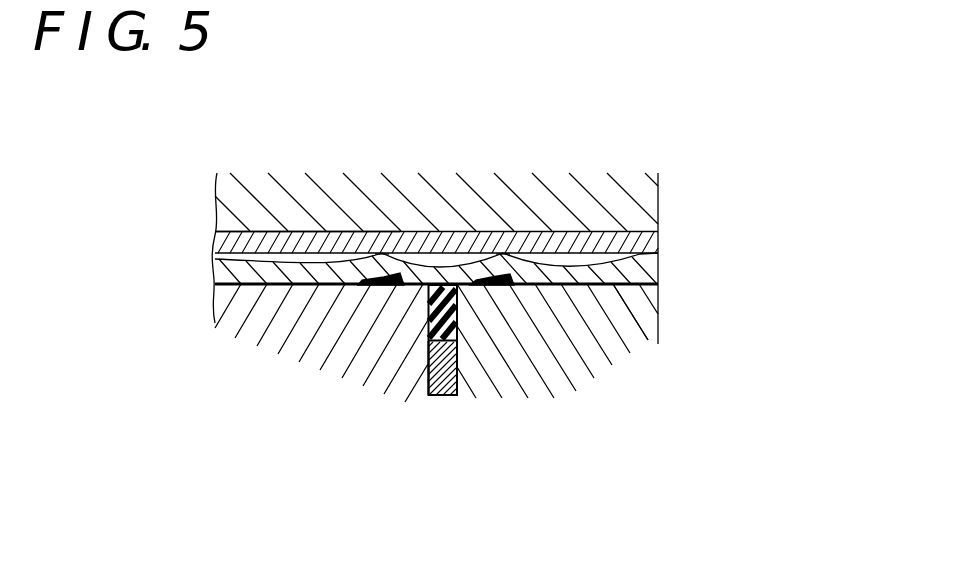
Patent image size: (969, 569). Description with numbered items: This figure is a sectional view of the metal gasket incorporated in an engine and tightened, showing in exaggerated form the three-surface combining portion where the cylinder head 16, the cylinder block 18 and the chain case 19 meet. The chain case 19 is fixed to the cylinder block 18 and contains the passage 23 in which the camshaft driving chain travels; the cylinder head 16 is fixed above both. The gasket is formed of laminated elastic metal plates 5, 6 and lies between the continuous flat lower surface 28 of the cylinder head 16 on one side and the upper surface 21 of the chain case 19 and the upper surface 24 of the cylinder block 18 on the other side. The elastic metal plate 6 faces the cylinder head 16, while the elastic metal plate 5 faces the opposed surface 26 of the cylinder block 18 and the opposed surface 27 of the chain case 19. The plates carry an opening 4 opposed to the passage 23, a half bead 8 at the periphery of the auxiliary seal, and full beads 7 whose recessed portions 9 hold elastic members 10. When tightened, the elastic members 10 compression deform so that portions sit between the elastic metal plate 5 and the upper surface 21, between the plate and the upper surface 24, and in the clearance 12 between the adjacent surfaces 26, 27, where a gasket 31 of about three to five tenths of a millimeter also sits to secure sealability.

The opening 4 is at (660, 241).
The elastic metal plate 5 is at (630, 287).
The elastic metal plate 6 is at (345, 243).
The full bead 7 is at (443, 272).
The half bead 8 is at (277, 265).
The recessed portion 9 is at (377, 287).
The elastic member 10 is at (381, 262).
The clearance 12 is at (442, 395).
The cylinder head 16 is at (557, 207).
The cylinder block 18 is at (289, 318).
The chain case 19 is at (574, 338).
The upper surface of the chain case 21 is at (587, 285).
The passage 23 is at (660, 309).
The upper surface of the cylinder block 24 is at (310, 282).
The opposed surface of the cylinder block 26 is at (427, 360).
The opposed surface of the chain case 27 is at (460, 373).
The lower surface of the cylinder head 28 is at (240, 238).
The gasket 31 is at (440, 396).